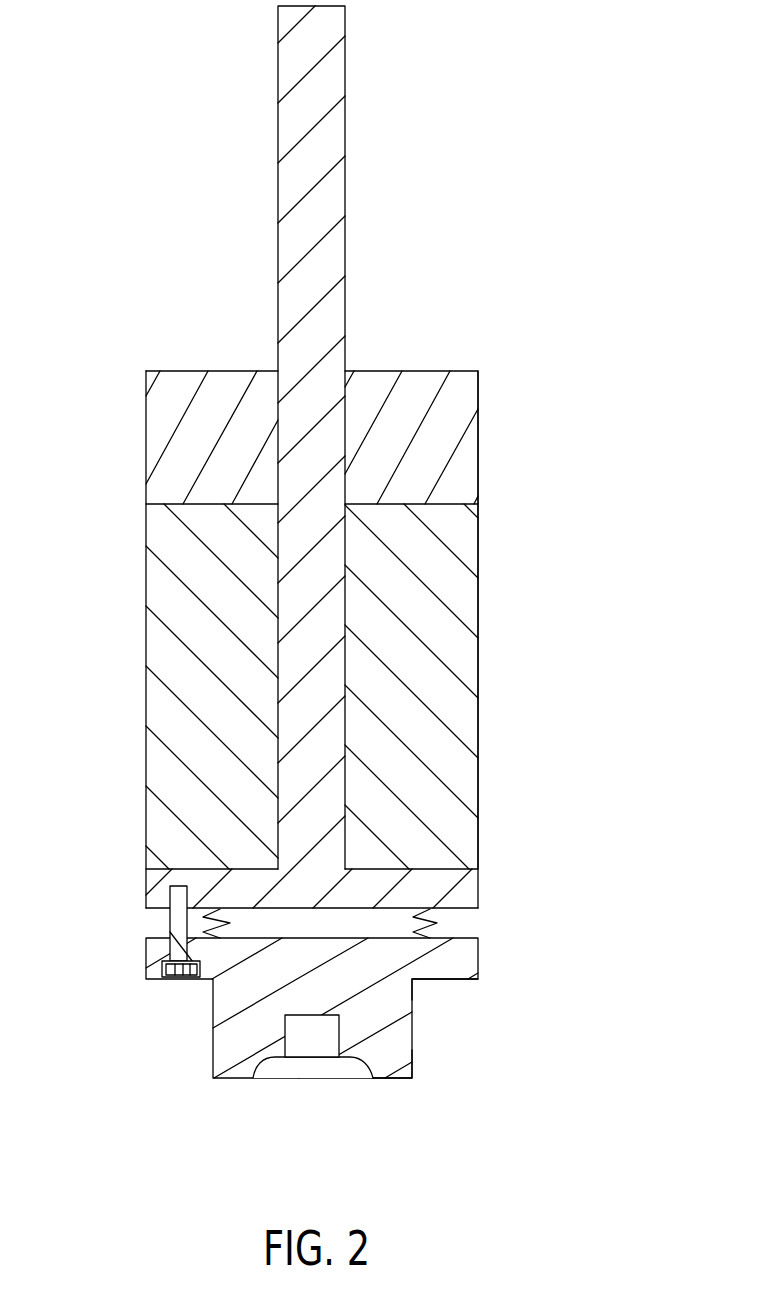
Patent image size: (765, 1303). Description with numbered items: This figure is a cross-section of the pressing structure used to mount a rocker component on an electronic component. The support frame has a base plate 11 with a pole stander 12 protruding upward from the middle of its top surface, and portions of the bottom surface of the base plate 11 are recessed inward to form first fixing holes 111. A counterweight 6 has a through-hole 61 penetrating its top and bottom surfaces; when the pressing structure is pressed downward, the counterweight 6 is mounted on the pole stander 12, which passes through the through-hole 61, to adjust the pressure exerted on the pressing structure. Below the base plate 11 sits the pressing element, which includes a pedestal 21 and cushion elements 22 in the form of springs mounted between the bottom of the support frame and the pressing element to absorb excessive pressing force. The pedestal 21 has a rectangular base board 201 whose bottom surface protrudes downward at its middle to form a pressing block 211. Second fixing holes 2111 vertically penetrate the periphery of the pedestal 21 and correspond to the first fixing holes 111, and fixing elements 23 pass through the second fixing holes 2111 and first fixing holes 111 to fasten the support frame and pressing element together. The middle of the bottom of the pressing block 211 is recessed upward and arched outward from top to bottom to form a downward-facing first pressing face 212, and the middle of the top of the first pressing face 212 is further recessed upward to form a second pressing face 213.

The counterweight 6 is at (458, 429).
The through-hole 61 is at (347, 368).
The pole stander 12 is at (327, 328).
The base plate 11 is at (465, 892).
The first fixing hole 111 is at (170, 897).
The cushion element 22 is at (438, 922).
The pedestal 21 is at (447, 960).
The base board 201 is at (435, 972).
The pressing block 211 is at (380, 1057).
The first pressing face 212 is at (350, 1060).
The second pressing face 213 is at (275, 1045).
The second fixing hole 2111 is at (162, 975).
The fixing element 23 is at (170, 953).